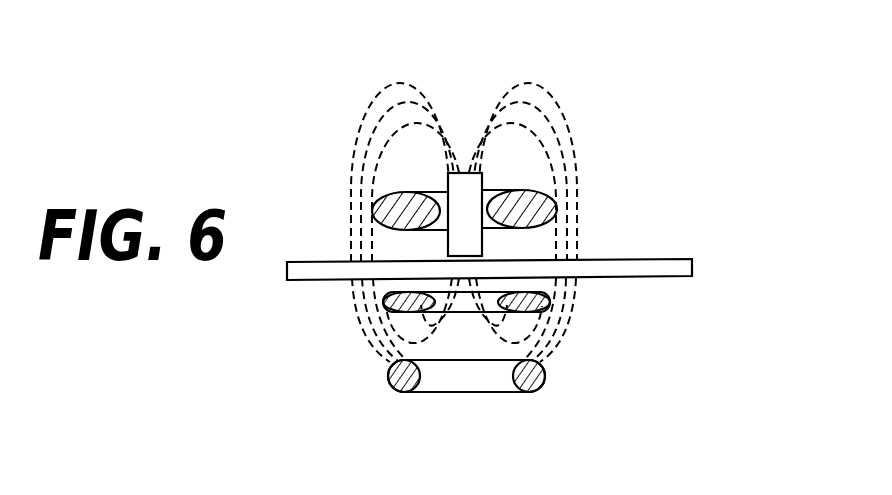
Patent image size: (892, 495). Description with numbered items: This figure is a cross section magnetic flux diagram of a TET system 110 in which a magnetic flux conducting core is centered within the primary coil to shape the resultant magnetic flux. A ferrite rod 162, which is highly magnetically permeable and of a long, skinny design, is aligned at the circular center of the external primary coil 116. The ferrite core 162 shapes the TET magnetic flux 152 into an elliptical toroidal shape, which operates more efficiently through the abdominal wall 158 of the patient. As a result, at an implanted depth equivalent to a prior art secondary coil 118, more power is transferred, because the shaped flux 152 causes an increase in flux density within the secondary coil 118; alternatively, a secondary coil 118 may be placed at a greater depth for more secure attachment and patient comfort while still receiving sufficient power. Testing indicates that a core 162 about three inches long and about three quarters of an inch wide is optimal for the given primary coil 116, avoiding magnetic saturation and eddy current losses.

The TET system 110 is at (672, 112).
The external primary coil 116 is at (553, 197).
The secondary coil 118 is at (546, 316).
The magnetic flux 152 is at (566, 306).
The abdominal wall 158 is at (655, 260).
The ferrite core rod 162 is at (470, 197).